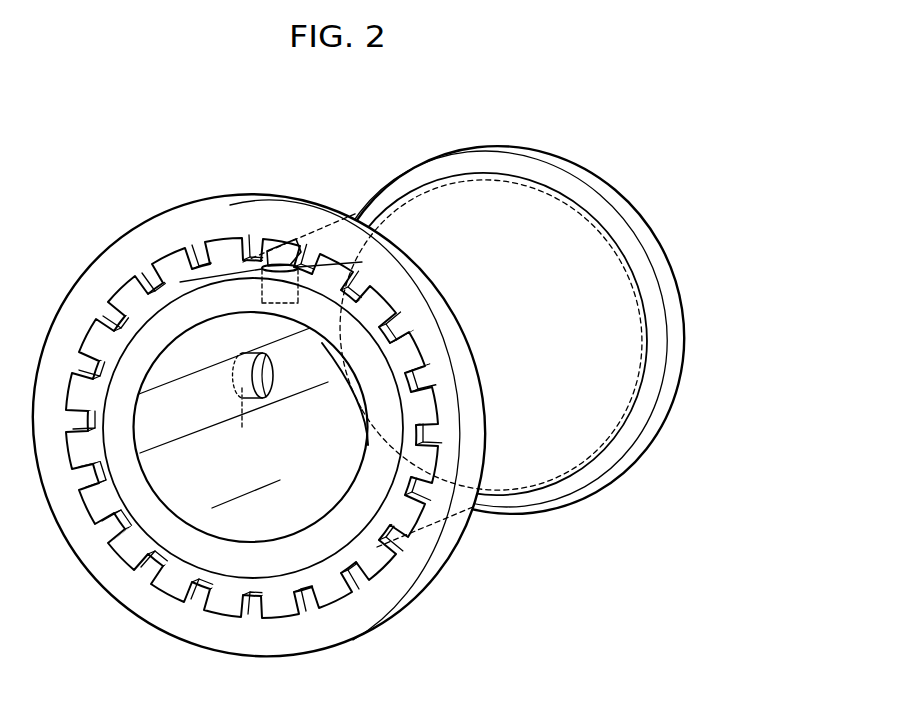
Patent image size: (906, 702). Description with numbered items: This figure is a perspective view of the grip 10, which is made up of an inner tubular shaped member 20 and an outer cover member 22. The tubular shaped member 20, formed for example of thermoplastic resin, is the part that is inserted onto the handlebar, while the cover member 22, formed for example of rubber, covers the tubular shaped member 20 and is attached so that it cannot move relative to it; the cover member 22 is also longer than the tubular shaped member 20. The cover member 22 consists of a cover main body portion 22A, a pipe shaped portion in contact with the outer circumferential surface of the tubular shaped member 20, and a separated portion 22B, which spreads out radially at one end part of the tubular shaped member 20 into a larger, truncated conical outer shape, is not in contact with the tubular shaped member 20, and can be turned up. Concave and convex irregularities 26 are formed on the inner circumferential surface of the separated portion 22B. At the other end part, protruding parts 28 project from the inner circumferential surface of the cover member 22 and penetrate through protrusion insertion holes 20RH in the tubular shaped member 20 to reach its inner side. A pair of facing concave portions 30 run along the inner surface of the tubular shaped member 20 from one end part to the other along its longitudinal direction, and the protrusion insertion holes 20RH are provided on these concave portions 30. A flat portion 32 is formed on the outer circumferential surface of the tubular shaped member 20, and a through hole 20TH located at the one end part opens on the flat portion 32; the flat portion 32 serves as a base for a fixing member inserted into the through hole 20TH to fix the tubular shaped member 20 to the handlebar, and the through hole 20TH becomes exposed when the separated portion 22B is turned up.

The grip 10 is at (375, 391).
The tubular shaped member 20 is at (263, 419).
The through hole 20TH is at (281, 266).
The protrusion insertion holes 20RH is at (247, 422).
The cover member 22 is at (375, 391).
The cover main body portion 22A is at (530, 473).
The separated portion 22B is at (580, 600).
The concave and convex irregularities 26 is at (104, 342).
The protruding parts 28 is at (268, 372).
The concave portions 30 is at (142, 432).
The flat portion 32 is at (249, 268).